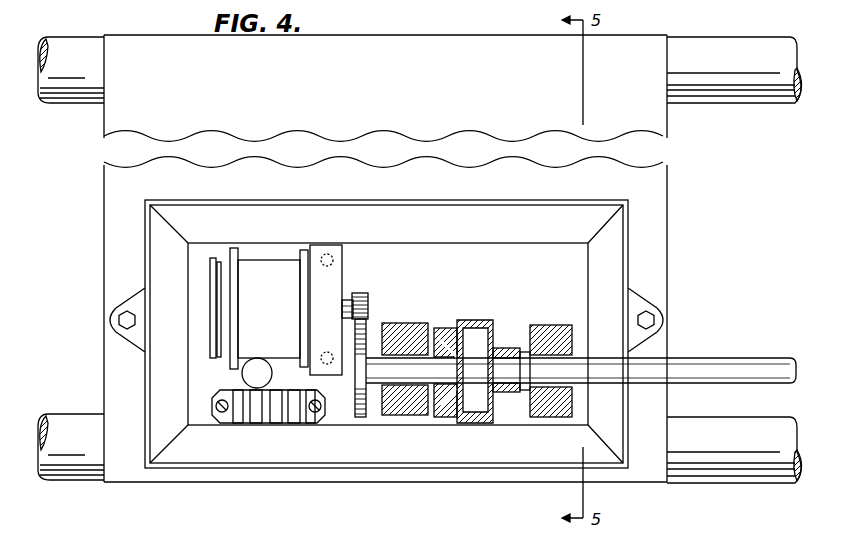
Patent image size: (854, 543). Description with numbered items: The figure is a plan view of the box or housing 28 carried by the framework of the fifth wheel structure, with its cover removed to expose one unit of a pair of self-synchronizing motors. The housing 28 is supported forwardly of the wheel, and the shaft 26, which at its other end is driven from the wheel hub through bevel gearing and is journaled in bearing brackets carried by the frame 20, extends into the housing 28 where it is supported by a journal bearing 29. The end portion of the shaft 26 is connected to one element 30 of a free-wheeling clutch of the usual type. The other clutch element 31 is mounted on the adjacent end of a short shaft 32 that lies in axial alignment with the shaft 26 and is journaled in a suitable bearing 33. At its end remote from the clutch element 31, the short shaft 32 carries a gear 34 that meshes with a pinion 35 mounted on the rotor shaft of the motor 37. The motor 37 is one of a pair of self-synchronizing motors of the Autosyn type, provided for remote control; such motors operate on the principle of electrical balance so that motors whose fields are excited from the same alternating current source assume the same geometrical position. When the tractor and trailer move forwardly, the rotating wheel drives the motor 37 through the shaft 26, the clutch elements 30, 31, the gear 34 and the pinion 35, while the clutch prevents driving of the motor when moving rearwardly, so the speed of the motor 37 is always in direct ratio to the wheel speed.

The frame 20 is at (738, 470).
The shaft 26 is at (738, 365).
The housing 28 is at (623, 240).
The journal bearing 29 is at (540, 327).
The clutch element 30 is at (485, 330).
The clutch element 31 is at (445, 330).
The short shaft 32 is at (393, 345).
The bearing 33 is at (413, 415).
The gear 34 is at (358, 418).
The pinion 35 is at (358, 293).
The motor 37 is at (272, 268).